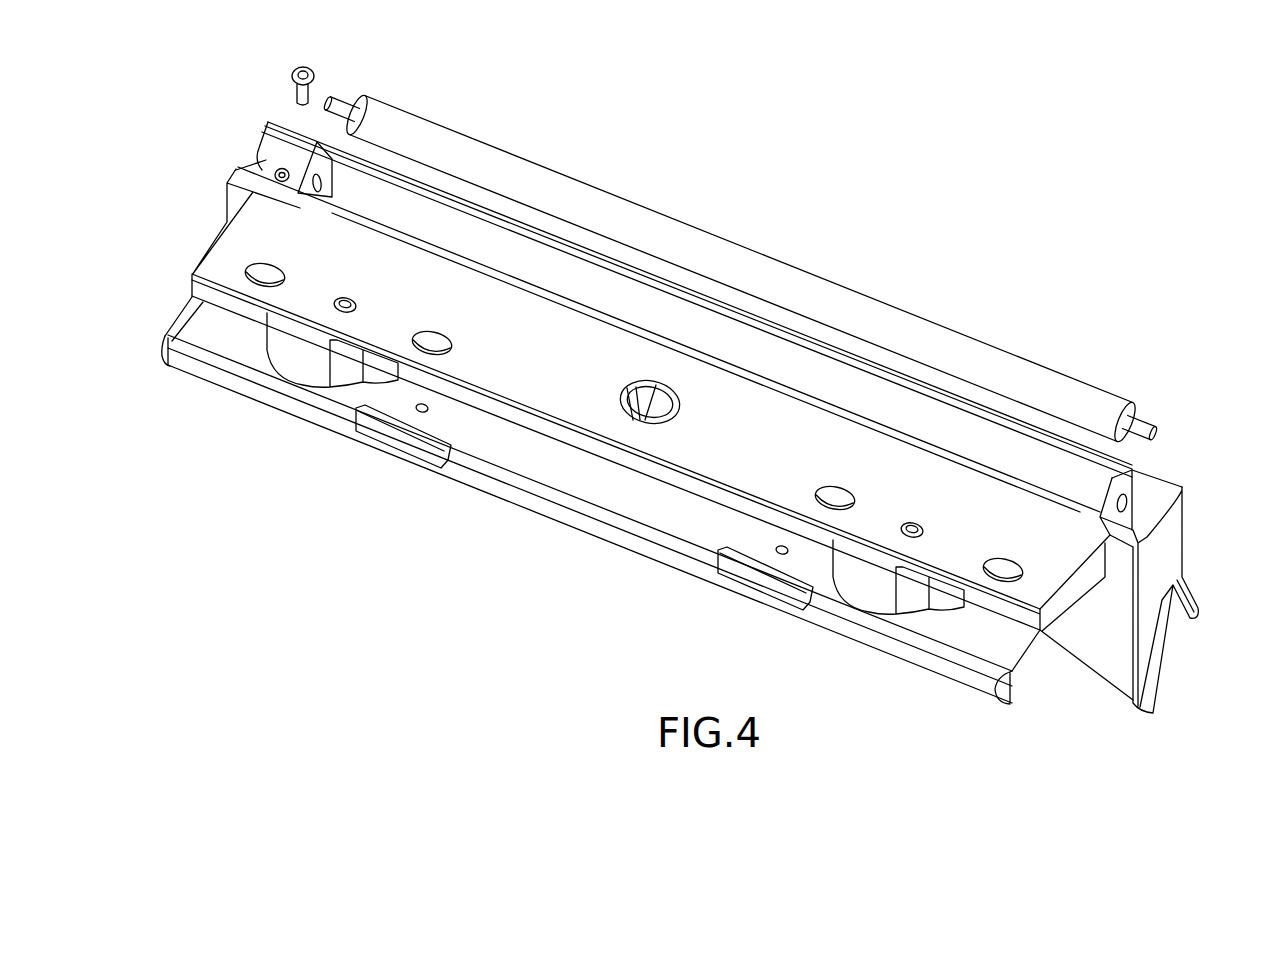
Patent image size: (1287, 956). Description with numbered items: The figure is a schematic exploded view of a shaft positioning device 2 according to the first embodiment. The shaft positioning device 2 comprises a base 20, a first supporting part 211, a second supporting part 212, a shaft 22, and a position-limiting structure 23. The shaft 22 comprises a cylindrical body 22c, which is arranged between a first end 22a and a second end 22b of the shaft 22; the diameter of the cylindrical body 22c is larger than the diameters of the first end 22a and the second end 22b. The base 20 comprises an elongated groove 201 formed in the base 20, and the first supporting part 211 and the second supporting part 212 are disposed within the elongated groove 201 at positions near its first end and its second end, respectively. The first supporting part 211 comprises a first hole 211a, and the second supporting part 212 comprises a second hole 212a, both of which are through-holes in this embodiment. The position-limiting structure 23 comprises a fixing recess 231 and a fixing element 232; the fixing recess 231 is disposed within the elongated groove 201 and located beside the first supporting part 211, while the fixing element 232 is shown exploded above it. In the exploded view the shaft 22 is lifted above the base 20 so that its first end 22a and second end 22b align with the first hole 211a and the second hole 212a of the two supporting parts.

The shaft positioning device 2 is at (1113, 188).
The base 20 is at (717, 462).
The elongated groove 201 is at (607, 303).
The first supporting part 211 is at (297, 183).
The first hole 211a is at (330, 186).
The second supporting part 212 is at (1131, 467).
The second hole 212a is at (1132, 505).
The shaft 22 is at (849, 280).
The first end 22a is at (342, 104).
The second end 22b is at (1143, 415).
The cylindrical body 22c is at (932, 332).
The position-limiting structure 23 is at (207, 48).
The fixing recess 231 is at (280, 170).
The fixing element 232 is at (298, 68).